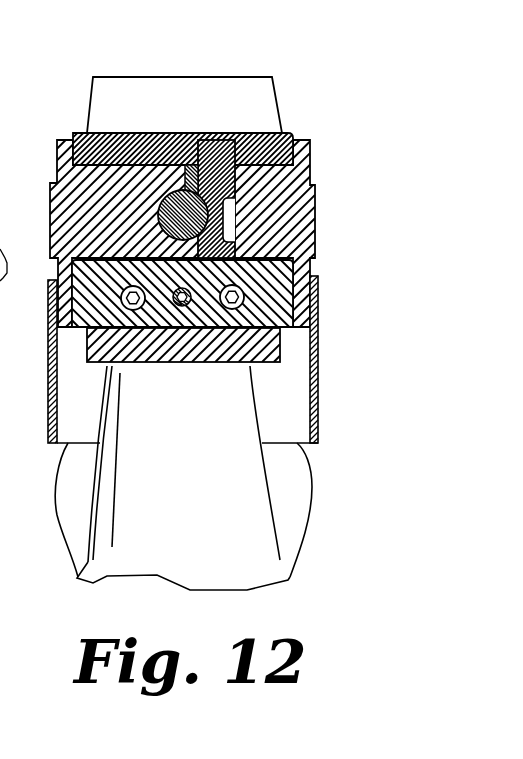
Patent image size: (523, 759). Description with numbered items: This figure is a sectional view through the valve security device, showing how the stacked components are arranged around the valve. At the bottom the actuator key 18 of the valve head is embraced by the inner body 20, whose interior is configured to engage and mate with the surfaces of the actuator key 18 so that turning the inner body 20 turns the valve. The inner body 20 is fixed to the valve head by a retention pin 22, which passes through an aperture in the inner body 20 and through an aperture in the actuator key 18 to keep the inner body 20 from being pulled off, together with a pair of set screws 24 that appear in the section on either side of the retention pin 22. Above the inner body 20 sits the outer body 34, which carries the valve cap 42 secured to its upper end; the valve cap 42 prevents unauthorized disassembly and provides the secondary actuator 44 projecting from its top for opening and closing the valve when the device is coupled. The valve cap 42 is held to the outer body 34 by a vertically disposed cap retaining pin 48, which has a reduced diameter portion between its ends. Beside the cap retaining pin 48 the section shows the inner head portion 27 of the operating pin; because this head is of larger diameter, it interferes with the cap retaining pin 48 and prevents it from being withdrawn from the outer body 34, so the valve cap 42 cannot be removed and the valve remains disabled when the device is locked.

The actuator key 18 is at (280, 355).
The inner body 20 is at (293, 274).
The retention pin 22 is at (182, 306).
The set screws 24 is at (133, 300).
The inner head portion 27 is at (188, 167).
The outer body 34 is at (316, 193).
The valve cap 42 is at (74, 135).
The secondary actuator 44 is at (182, 83).
The cap retaining pin 48 is at (223, 167).